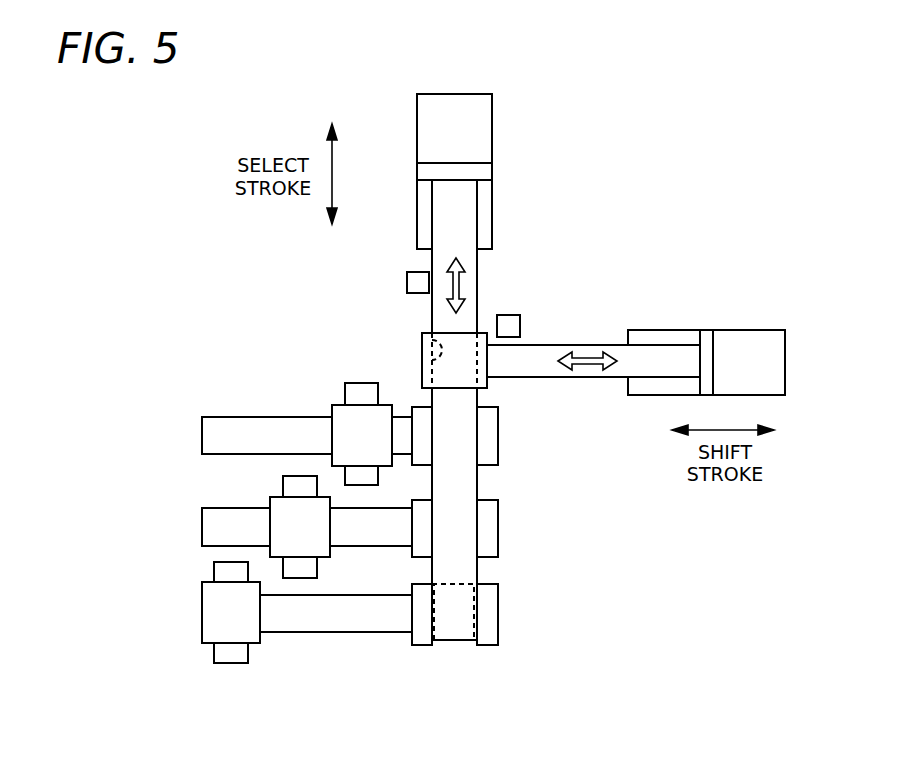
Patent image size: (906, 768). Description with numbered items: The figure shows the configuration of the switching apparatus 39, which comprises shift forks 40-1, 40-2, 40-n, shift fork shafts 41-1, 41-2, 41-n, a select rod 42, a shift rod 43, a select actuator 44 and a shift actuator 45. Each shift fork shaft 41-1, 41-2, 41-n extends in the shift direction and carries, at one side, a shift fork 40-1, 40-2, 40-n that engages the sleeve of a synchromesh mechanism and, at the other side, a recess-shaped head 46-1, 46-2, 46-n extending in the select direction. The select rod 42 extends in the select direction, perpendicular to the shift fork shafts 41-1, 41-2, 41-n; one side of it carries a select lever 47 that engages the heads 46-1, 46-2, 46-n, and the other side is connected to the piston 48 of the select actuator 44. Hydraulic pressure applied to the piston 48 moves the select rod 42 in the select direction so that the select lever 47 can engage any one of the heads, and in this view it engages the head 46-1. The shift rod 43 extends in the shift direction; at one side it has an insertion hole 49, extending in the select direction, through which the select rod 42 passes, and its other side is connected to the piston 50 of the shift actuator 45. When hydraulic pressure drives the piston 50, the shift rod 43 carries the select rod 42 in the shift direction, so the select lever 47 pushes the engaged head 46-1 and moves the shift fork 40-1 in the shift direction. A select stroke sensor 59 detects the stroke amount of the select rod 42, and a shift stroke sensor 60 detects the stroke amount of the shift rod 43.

The switching apparatus 39 is at (153, 207).
The shift fork 40-1 is at (222, 655).
The shift fork 40-2 is at (295, 568).
The shift fork 40-n is at (356, 395).
The shift fork shaft 41-1 is at (320, 624).
The shift fork shaft 41-2 is at (218, 523).
The shift fork shaft 41-n is at (216, 435).
The select rod 42 is at (443, 318).
The shift rod 43 is at (582, 348).
The select actuator 44 is at (516, 147).
The shift actuator 45 is at (741, 309).
The head 46-1 is at (490, 625).
The head 46-2 is at (490, 527).
The head 46-n is at (490, 437).
The select lever 47 is at (453, 628).
The piston 48 is at (486, 171).
The insertion hole 49 is at (428, 348).
The piston 50 is at (708, 340).
The select stroke sensor 59 is at (415, 283).
The shift stroke sensor 60 is at (512, 322).